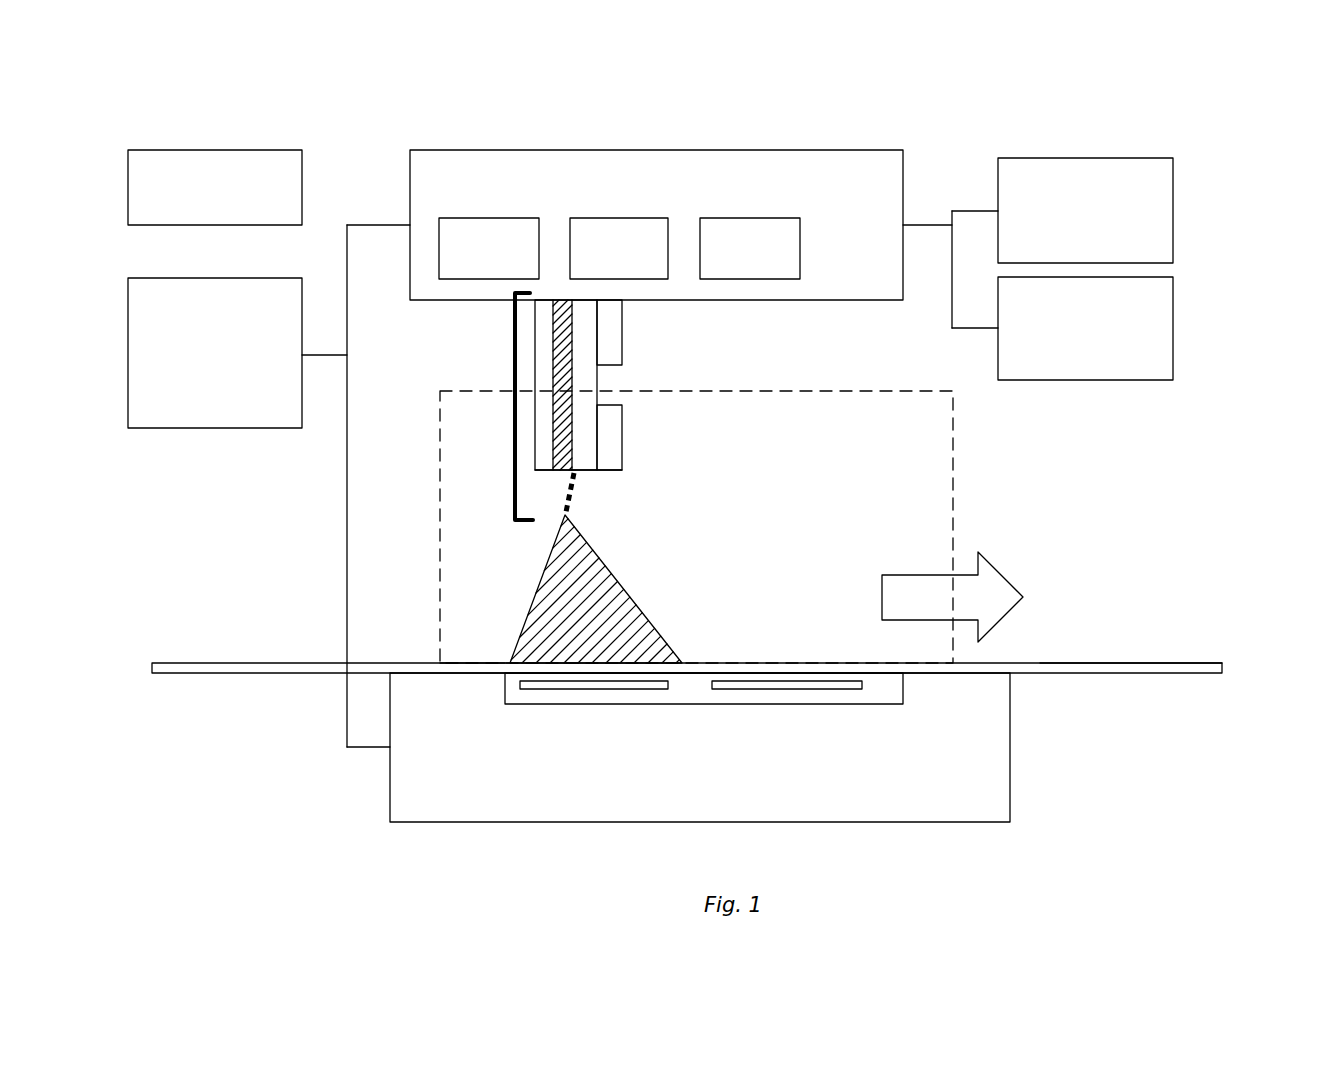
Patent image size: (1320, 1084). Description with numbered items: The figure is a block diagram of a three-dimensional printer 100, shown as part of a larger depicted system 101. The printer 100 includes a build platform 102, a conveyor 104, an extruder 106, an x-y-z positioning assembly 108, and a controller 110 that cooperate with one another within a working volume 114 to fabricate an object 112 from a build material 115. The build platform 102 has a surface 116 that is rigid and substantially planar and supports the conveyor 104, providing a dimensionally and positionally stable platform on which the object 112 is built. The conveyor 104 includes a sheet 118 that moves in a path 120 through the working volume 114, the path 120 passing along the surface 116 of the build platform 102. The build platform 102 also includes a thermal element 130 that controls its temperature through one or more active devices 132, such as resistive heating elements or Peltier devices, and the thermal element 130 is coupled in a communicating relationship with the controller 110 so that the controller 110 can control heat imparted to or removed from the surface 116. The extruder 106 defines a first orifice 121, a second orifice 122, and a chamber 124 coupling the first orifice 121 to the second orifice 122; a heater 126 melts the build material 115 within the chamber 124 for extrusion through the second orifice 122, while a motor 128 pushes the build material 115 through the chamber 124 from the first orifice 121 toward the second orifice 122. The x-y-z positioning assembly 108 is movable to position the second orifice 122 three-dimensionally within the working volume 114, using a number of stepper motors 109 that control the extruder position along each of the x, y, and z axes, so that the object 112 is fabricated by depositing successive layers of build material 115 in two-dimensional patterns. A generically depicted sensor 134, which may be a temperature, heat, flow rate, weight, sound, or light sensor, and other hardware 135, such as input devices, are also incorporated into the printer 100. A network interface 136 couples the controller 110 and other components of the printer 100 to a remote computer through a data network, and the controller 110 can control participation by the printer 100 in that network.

The printer 100 is at (1160, 497).
The printing system 101 is at (1203, 126).
The build platform 102 is at (950, 804).
The conveyor 104 is at (222, 663).
The extruder 106 is at (515, 355).
The x-y-z positioning assembly 108 is at (455, 202).
The stepper motors 109 is at (469, 260).
The controller 110 is at (168, 337).
The object 112 is at (617, 578).
The working volume 114 is at (953, 525).
The build material 115 is at (570, 500).
The surface 116 is at (483, 682).
The sheet 118 is at (1050, 663).
The path 120 is at (897, 609).
The first orifice 121 is at (570, 300).
The second orifice 122 is at (572, 470).
The chamber 124 is at (543, 420).
The heater 126 is at (622, 440).
The motor 128 is at (622, 318).
The thermal element 130 is at (660, 705).
The active devices 132 is at (805, 705).
The sensor 134 is at (1037, 234).
The other hardware 135 is at (1042, 337).
The network interface 136 is at (160, 202).